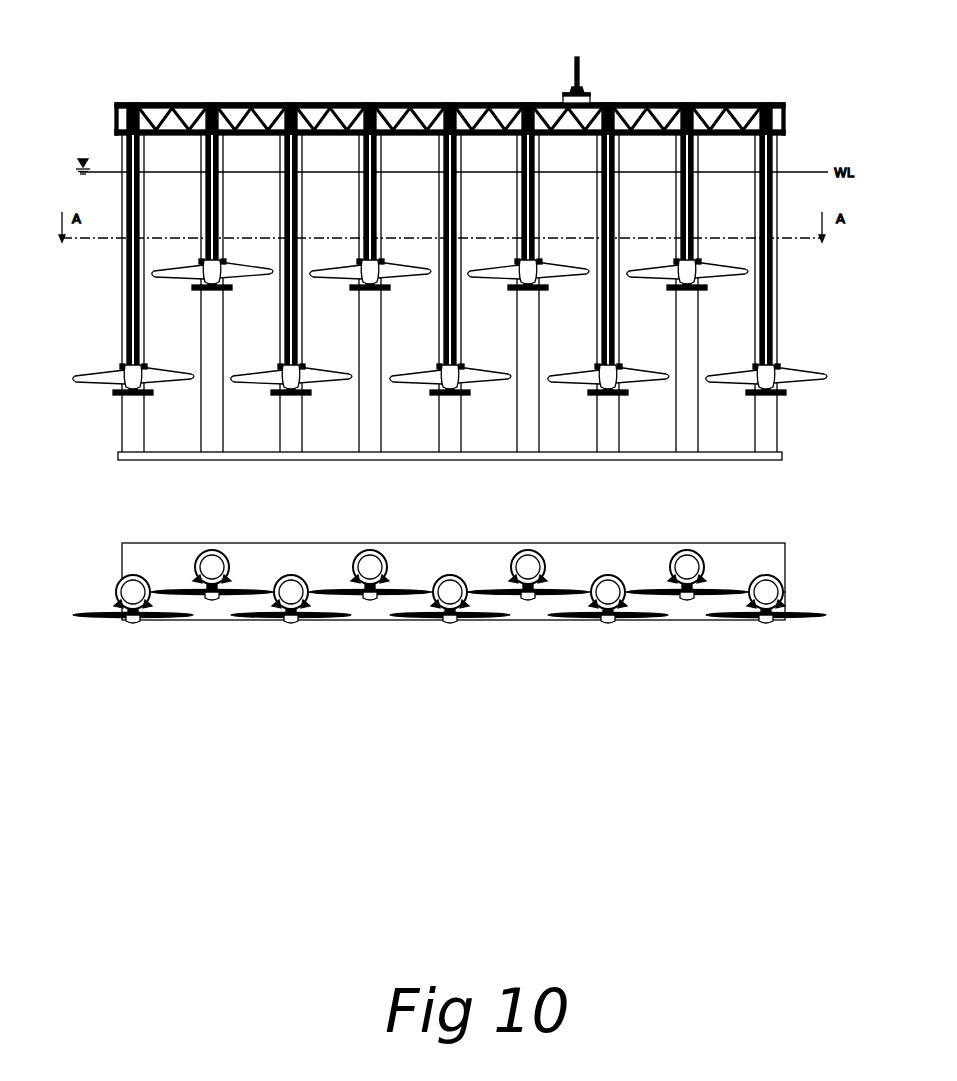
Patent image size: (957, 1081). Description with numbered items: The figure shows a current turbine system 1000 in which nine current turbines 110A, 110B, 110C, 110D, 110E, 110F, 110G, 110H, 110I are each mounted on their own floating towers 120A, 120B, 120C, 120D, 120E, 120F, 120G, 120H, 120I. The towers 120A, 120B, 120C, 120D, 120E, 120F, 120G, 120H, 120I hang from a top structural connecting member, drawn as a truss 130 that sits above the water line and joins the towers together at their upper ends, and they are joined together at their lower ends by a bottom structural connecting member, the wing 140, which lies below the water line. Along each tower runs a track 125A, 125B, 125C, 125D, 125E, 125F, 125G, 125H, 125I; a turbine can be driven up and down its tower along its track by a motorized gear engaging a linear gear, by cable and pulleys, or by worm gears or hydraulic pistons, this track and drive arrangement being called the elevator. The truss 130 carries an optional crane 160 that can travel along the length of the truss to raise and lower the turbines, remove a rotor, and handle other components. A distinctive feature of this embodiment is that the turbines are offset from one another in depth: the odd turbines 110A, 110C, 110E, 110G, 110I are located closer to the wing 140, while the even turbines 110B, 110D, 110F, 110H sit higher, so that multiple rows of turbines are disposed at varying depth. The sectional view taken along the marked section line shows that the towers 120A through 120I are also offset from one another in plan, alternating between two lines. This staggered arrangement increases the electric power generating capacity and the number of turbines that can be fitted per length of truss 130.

The current turbine system 1000 is at (165, 100).
The truss 130 is at (661, 102).
The crane 160 is at (577, 56).
The wing 140 is at (424, 462).
The track 125A is at (141, 208).
The track 125B is at (220, 208).
The track 125C is at (299, 208).
The track 125D is at (378, 208).
The track 125E is at (458, 208).
The track 125F is at (536, 208).
The track 125G is at (616, 208).
The track 125H is at (695, 208).
The track 125I is at (774, 208).
The current turbine 110A is at (94, 370).
The current turbine 110B is at (176, 268).
The current turbine 110C is at (252, 370).
The current turbine 110D is at (334, 268).
The current turbine 110E is at (411, 370).
The current turbine 110F is at (492, 268).
The current turbine 110G is at (569, 370).
The current turbine 110H is at (651, 268).
The current turbine 110I is at (727, 370).
The floating tower 120A is at (122, 417).
The floating tower 120B is at (201, 329).
The floating tower 120C is at (280, 417).
The floating tower 120D is at (359, 329).
The floating tower 120E is at (439, 417).
The floating tower 120F is at (517, 329).
The floating tower 120G is at (597, 417).
The floating tower 120H is at (676, 329).
The floating tower 120I is at (755, 417).